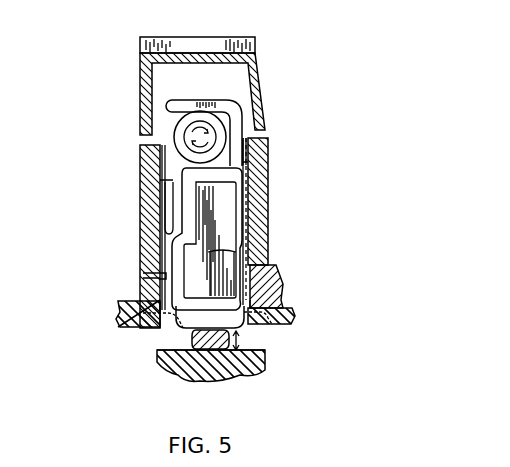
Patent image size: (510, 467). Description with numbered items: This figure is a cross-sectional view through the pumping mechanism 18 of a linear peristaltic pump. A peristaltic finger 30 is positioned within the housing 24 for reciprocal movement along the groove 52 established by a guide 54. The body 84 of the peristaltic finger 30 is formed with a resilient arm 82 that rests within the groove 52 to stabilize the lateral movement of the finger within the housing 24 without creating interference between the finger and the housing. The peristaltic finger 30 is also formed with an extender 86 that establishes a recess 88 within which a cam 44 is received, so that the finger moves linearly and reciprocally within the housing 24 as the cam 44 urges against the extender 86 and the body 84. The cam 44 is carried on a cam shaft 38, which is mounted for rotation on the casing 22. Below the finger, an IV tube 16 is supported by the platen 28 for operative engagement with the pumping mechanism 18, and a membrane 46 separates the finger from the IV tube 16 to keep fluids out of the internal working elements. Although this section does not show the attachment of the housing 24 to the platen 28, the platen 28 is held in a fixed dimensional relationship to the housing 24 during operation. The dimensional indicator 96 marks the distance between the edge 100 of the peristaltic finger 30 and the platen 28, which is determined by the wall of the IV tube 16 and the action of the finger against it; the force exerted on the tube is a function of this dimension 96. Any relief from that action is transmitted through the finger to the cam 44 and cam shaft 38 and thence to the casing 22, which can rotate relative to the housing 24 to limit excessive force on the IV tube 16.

The IV tube 16 is at (232, 372).
The pumping mechanism 18 is at (312, 170).
The casing 22 is at (255, 46).
The housing 24 is at (152, 212).
The platen 28 is at (178, 367).
The peristaltic finger 30 is at (228, 222).
The cam shaft 38 is at (196, 132).
The cam 44 is at (163, 160).
The membrane 46 is at (170, 324).
The groove 52 is at (143, 285).
The guide 54 is at (160, 264).
The resilient arm 82 is at (168, 181).
The body 84 is at (237, 252).
The extender 86 is at (228, 102).
The recess 88 is at (258, 160).
The dimensional indicator 96 is at (240, 342).
The edge 100 is at (281, 292).